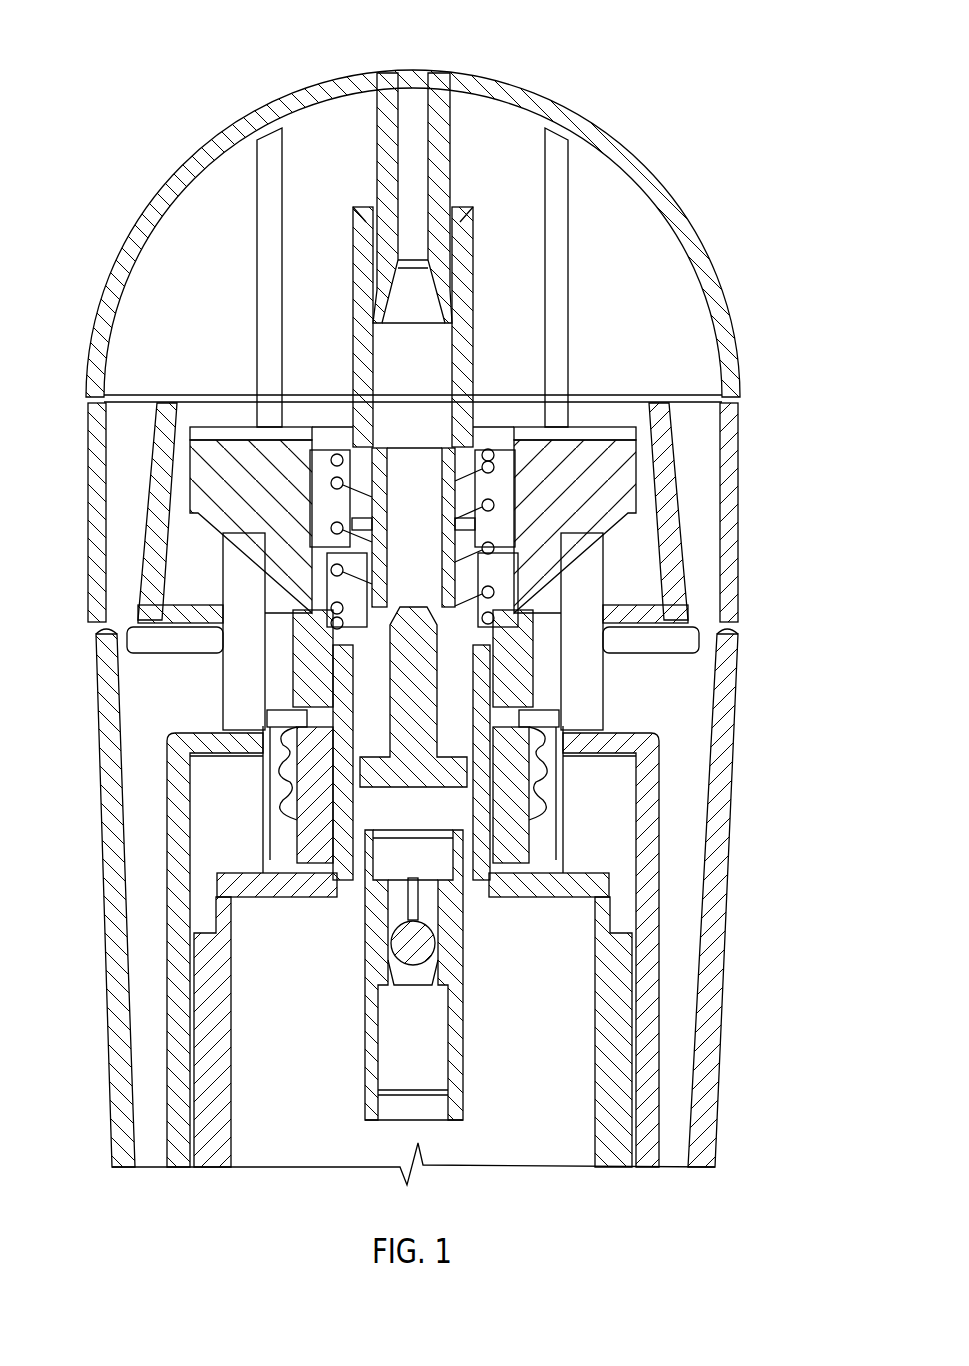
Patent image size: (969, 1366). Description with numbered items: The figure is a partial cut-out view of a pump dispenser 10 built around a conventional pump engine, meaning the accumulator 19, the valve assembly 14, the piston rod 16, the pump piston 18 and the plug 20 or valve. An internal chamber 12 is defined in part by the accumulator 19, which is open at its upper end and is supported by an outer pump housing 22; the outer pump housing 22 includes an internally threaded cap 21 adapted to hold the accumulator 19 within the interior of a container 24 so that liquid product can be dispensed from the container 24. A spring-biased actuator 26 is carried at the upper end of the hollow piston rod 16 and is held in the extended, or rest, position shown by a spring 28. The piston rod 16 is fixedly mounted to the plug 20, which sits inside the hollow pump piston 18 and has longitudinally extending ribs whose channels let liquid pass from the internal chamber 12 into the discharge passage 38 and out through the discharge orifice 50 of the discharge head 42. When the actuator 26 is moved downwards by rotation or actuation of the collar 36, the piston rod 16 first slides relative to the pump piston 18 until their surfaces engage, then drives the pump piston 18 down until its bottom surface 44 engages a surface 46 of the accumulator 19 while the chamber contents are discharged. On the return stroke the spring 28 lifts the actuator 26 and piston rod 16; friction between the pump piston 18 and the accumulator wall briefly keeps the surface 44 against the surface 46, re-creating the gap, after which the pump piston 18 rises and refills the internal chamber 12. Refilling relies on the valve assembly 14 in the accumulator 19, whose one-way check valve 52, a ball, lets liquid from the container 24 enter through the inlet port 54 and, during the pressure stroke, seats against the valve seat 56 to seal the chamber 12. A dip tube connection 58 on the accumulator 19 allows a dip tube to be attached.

The pump dispenser 10 is at (673, 103).
The internal chamber 12 is at (413, 853).
The valve assembly 14 is at (372, 963).
The piston rod 16 is at (577, 463).
The pump piston 18 is at (493, 743).
The accumulator 19 is at (468, 835).
The plug 20 is at (423, 717).
The internally threaded cap 21 is at (285, 767).
The outer pump housing 22 is at (736, 752).
The container 24 is at (507, 880).
The spring-biased actuator 26 is at (517, 560).
The spring 28 is at (447, 573).
The collar 36 is at (742, 538).
The discharge passage 38 is at (397, 343).
The discharge head 42 is at (687, 222).
The bottom surface 44 is at (353, 763).
The surface 46 is at (353, 867).
The discharge orifice 50 is at (413, 70).
The one-way check valve 52 is at (535, 1017).
The inlet port 54 is at (413, 987).
The valve seat 56 is at (413, 943).
The dip tube connection 58 is at (460, 1062).